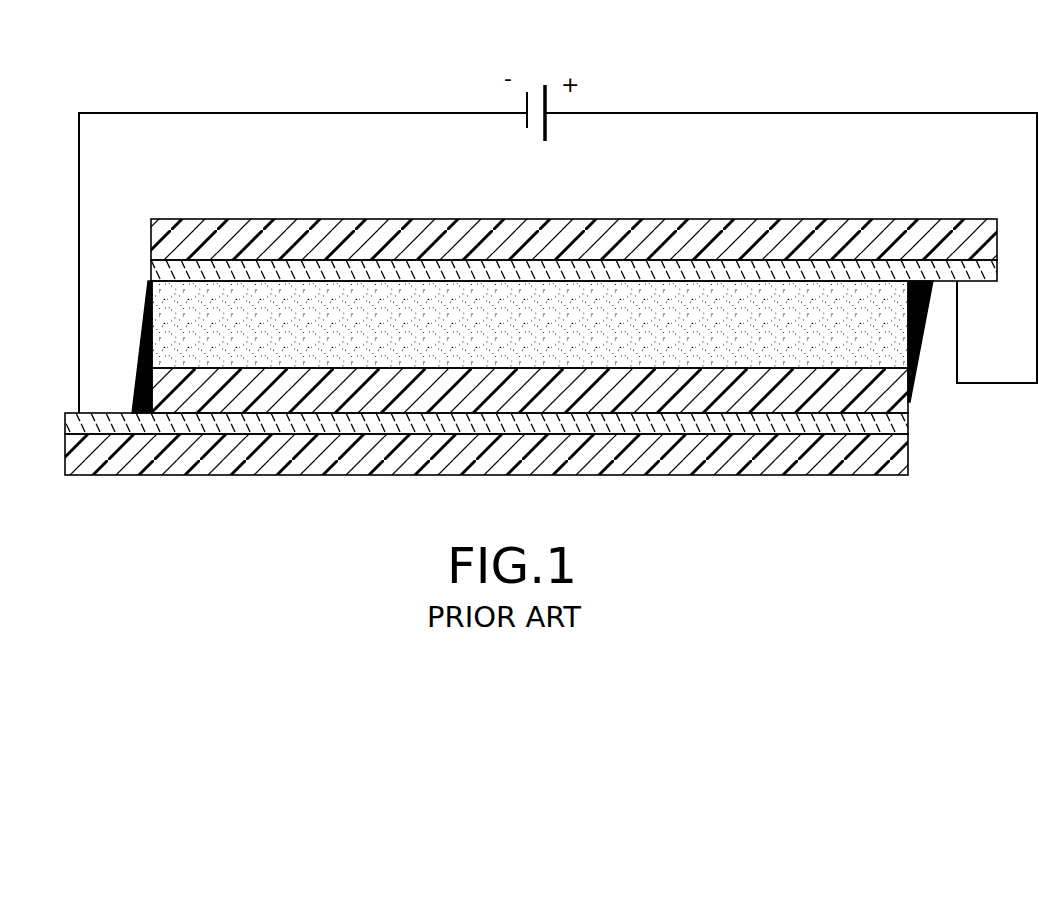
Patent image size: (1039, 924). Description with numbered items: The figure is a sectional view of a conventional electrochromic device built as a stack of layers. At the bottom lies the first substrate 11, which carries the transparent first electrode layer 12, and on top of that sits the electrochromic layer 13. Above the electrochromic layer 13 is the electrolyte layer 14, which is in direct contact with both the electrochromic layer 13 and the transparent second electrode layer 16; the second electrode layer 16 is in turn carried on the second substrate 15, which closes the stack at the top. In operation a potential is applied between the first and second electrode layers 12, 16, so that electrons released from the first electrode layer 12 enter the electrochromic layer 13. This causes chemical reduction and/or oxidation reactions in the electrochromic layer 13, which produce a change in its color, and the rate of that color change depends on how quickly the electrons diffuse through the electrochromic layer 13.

The first substrate 11 is at (832, 452).
The transparent first electrode layer 12 is at (897, 418).
The electrochromic layer 13 is at (165, 393).
The electrolyte layer 14 is at (168, 342).
The second substrate 15 is at (780, 230).
The transparent second electrode layer 16 is at (988, 268).